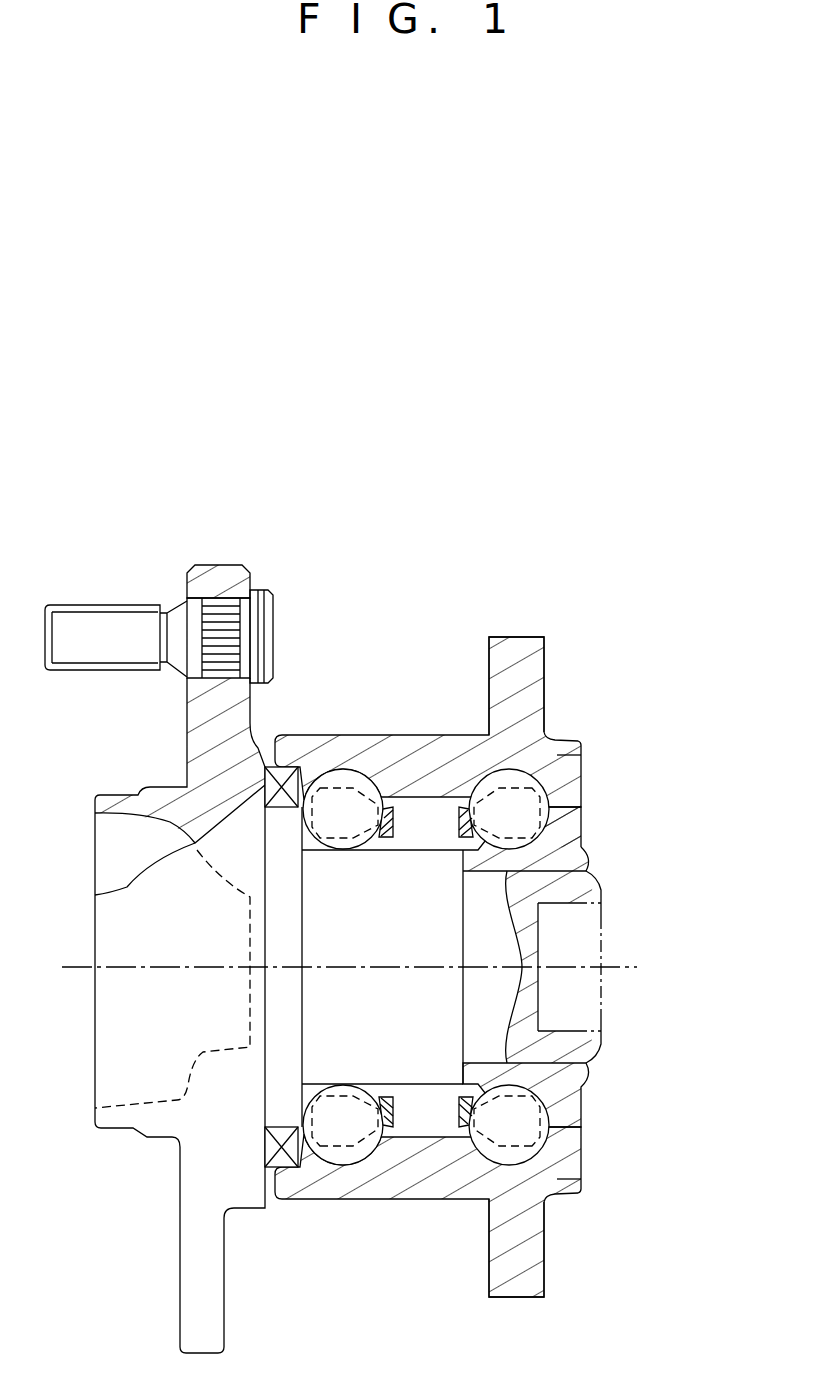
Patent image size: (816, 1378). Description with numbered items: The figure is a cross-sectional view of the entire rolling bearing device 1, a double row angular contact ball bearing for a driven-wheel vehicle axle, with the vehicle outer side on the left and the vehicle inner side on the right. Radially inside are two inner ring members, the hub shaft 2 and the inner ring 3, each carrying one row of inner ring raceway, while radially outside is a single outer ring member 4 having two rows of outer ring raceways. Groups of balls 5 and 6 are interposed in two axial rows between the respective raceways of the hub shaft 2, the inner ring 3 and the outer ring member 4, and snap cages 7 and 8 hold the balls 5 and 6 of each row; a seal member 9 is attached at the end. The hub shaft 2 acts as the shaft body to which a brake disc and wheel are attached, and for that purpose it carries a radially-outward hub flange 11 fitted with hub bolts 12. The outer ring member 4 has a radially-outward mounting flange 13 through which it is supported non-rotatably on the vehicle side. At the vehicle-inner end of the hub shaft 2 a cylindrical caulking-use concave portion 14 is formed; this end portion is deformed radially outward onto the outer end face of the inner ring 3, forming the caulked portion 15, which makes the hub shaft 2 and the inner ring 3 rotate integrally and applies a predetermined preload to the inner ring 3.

The rolling bearing device 1 is at (399, 552).
The hub shaft 2 is at (322, 1028).
The inner ring 3 is at (573, 825).
The outer ring member 4 is at (427, 910).
The balls 5 is at (345, 790).
The balls 6 is at (490, 790).
The snap cage 7 is at (390, 1128).
The snap cage 8 is at (457, 1120).
The seal member 9 is at (284, 790).
The hub flange 11 is at (215, 565).
The hub bolts 12 is at (110, 605).
The mounting flange 13 is at (513, 640).
The caulking-use concave portion 14 is at (572, 993).
The caulked portion 15 is at (590, 862).